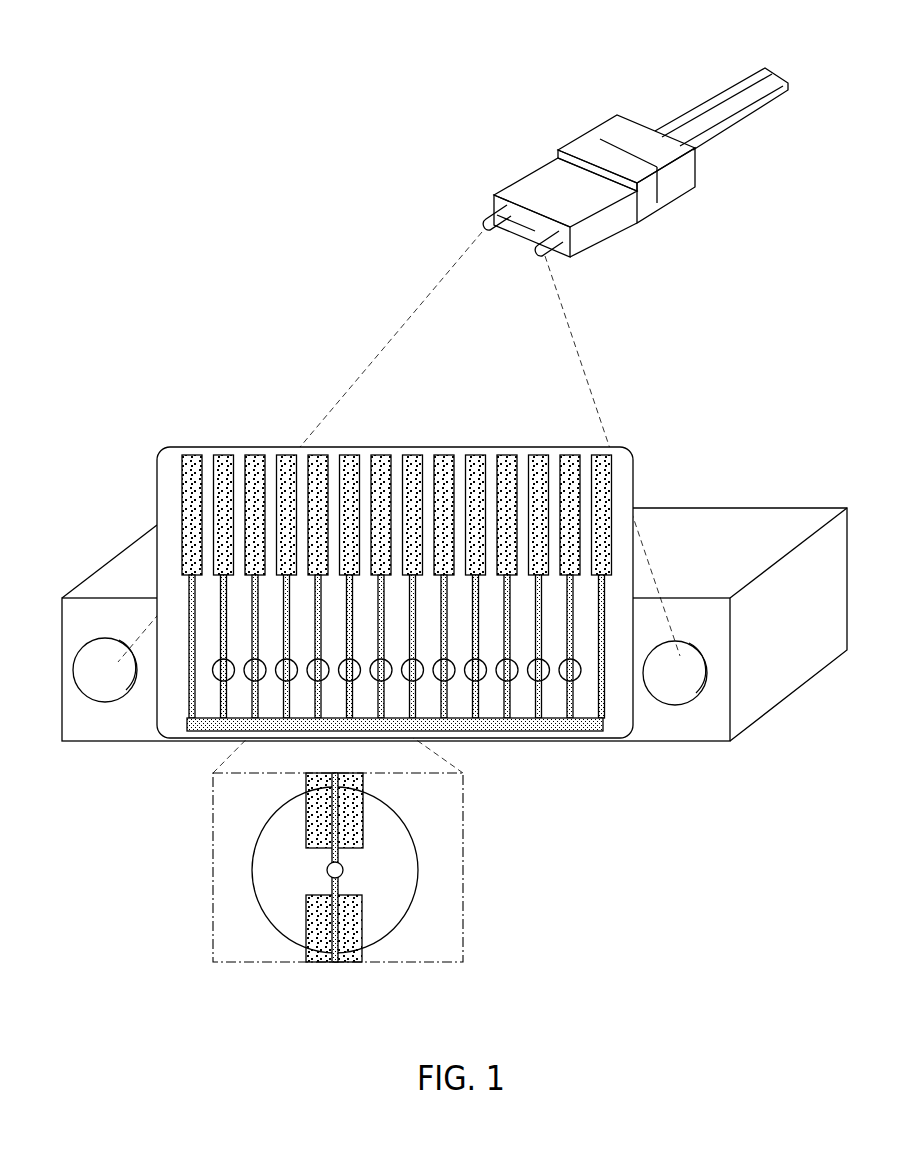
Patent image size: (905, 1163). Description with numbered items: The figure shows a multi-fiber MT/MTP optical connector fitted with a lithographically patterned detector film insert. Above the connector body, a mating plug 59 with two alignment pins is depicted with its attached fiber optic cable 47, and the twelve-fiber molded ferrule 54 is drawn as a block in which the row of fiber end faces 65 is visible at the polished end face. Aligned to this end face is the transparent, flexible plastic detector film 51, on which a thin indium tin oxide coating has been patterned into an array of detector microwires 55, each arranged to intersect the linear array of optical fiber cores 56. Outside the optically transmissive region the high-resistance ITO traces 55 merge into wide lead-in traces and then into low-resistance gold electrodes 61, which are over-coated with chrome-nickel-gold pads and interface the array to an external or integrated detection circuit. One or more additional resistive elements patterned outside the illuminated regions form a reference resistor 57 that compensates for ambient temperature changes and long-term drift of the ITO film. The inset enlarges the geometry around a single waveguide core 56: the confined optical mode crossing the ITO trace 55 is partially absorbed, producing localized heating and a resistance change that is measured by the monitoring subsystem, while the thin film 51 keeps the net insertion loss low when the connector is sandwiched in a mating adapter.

The optical fiber cable 47 is at (748, 92).
The detector film 51 is at (623, 468).
The ferrule 54 is at (480, 212).
The detector microwires 55 is at (333, 858).
The optical fiber core 56 is at (345, 868).
The reference resistor 57 is at (607, 668).
The optical connector plug 59 is at (530, 160).
The electrodes 61 is at (445, 460).
The fiber end faces 65 is at (578, 677).